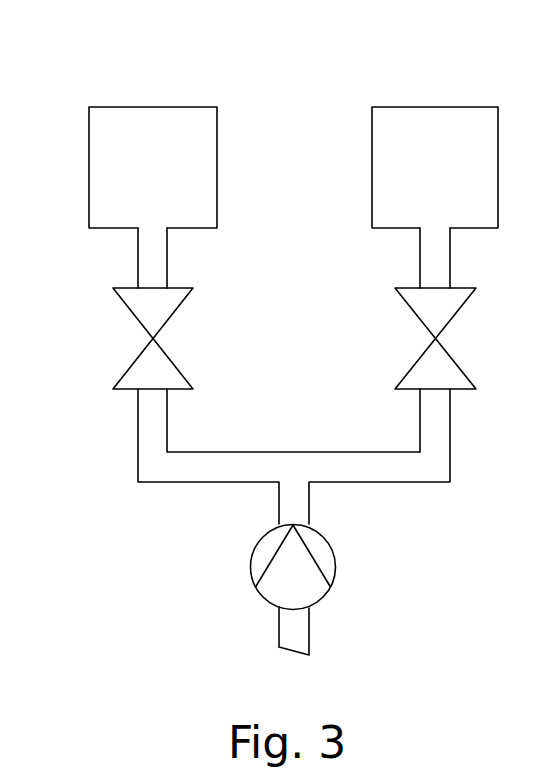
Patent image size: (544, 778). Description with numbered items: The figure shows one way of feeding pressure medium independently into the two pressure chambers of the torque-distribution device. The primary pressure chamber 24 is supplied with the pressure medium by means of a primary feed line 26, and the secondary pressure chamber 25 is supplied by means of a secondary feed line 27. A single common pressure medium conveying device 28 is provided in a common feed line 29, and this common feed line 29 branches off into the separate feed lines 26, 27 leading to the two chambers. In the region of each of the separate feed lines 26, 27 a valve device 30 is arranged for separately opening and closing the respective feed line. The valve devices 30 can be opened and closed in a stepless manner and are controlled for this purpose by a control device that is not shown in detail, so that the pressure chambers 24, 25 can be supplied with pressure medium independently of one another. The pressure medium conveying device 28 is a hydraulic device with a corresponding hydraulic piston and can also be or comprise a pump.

The primary pressure chamber 24 is at (150, 107).
The secondary pressure chamber 25 is at (439, 107).
The primary feed line 26 is at (137, 252).
The secondary feed line 27 is at (420, 252).
The pressure medium conveying device 28 is at (337, 560).
The common feed line 29 is at (279, 618).
The valve device 30 is at (170, 358).